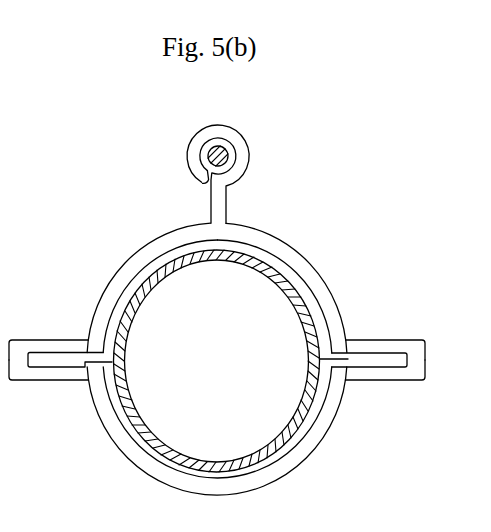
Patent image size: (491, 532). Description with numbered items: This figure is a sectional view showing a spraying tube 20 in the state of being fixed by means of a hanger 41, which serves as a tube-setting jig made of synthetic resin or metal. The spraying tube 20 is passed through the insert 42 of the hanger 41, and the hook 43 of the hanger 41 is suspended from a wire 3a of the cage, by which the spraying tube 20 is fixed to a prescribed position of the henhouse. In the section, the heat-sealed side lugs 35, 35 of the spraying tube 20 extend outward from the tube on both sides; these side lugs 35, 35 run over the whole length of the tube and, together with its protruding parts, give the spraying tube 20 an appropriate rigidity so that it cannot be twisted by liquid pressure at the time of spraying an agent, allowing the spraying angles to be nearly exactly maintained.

The wire 3a is at (247, 150).
The hook 43 is at (187, 156).
The hanger 41 is at (276, 231).
The insert 42 is at (320, 443).
The side lugs 35 is at (86, 368).
The spraying tube 20 is at (280, 280).